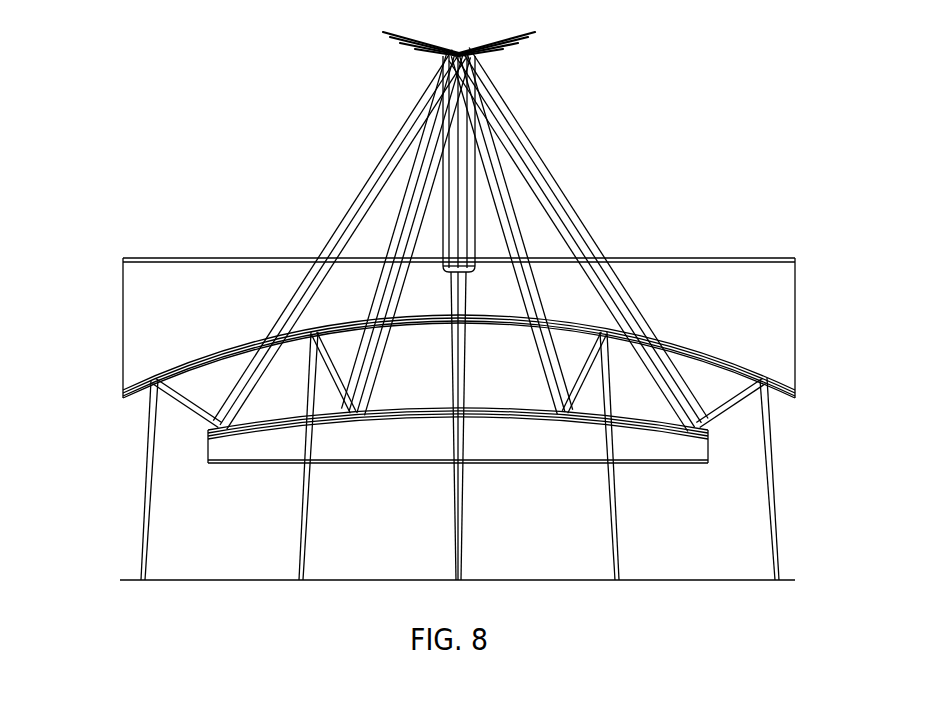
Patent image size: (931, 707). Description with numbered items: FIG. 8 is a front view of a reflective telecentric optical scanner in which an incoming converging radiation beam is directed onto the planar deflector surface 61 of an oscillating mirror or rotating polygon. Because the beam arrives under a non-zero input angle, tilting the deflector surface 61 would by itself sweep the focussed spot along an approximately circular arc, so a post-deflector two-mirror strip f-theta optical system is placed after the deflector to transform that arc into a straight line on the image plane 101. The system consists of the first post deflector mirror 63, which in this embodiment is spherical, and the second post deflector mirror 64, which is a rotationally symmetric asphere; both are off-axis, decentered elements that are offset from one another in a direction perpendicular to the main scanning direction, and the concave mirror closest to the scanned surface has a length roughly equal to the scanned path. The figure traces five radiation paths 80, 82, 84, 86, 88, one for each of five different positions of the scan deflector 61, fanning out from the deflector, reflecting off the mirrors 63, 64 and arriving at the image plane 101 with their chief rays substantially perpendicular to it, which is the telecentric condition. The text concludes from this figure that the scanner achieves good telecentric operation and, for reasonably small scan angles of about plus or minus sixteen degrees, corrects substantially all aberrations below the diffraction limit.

The planar deflector surface 61 is at (327, 44).
The second post deflector mirror 64 is at (102, 305).
The first post deflector mirror 63 is at (185, 453).
The radiation path 80 is at (142, 548).
The radiation path 82 is at (301, 548).
The radiation path 84 is at (458, 548).
The radiation path 86 is at (616, 548).
The radiation path 88 is at (777, 548).
The image plane 101 is at (700, 580).